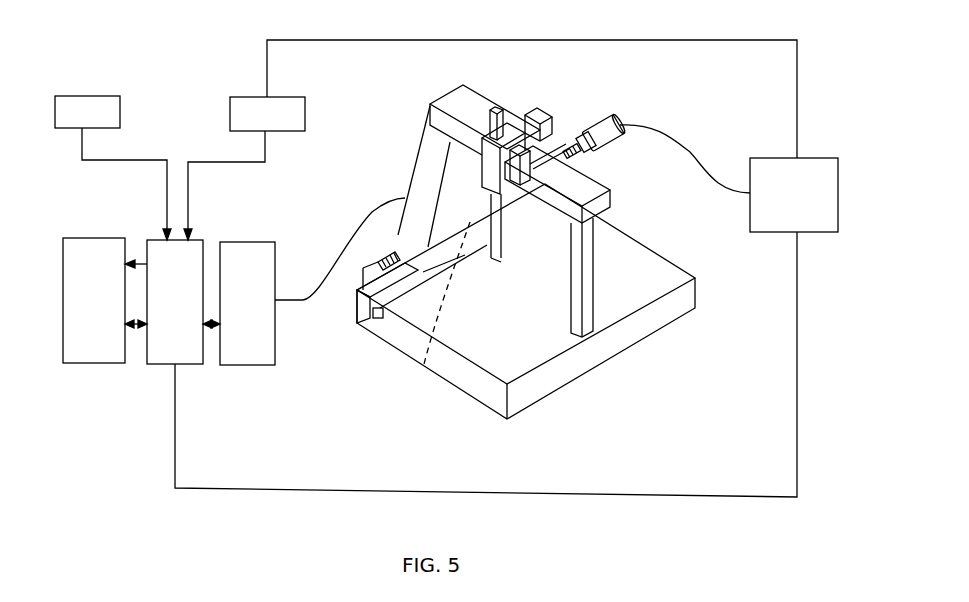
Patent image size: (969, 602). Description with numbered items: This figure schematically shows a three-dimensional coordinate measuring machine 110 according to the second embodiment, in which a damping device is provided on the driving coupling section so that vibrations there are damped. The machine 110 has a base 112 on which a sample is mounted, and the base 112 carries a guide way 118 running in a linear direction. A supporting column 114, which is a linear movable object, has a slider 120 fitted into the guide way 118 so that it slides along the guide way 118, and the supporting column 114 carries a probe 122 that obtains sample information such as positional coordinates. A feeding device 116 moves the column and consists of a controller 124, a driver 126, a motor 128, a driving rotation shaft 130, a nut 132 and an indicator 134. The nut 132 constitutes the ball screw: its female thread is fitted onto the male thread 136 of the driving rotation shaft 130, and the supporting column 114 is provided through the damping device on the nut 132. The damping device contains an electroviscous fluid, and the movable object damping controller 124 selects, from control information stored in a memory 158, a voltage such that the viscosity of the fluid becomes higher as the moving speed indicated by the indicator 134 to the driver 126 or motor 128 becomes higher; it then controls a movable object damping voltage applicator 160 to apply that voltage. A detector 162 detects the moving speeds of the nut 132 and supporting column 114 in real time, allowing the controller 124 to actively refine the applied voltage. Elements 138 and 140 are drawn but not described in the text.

The three-dimensional coordinate measuring machine 110 is at (843, 86).
The base 112 is at (548, 342).
The supporting column 114 is at (478, 104).
The feeding device 116 is at (390, 243).
The guide way 118 is at (378, 322).
The slider 120 is at (423, 272).
The probe 122 is at (493, 250).
The movable object damping controller 124 is at (180, 364).
The driver 126 is at (800, 158).
The motor 128 is at (600, 125).
The driving rotation shaft 130 is at (388, 257).
The nut 132 is at (462, 190).
The indicator 134 is at (84, 78).
The male thread 136 is at (431, 310).
The reflected light beam 138 is at (458, 200).
The light beam 140 is at (446, 195).
The memory 158 is at (82, 363).
The movable object damping voltage applicator 160 is at (230, 365).
The detector 162 is at (284, 80).